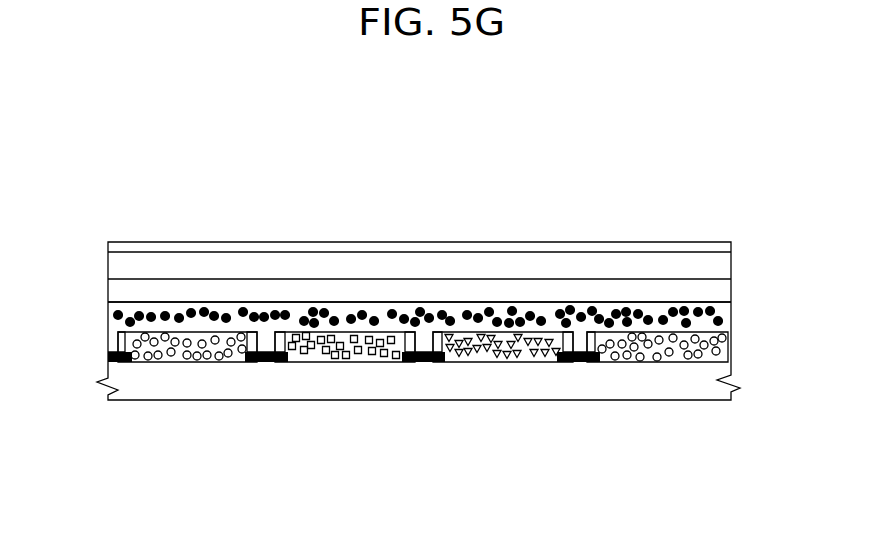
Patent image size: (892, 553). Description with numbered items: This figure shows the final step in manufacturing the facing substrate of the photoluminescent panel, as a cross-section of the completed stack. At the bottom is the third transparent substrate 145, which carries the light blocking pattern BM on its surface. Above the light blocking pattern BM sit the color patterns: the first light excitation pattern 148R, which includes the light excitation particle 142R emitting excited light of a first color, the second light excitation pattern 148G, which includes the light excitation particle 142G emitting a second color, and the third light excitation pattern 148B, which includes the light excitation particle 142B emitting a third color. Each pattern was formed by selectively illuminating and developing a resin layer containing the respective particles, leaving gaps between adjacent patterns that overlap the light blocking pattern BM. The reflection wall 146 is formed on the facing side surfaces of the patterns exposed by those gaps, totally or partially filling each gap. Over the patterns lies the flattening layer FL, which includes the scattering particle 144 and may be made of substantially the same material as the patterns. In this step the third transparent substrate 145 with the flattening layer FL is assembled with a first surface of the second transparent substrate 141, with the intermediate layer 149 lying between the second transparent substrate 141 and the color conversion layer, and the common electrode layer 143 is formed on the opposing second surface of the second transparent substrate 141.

The common electrode layer 143 is at (732, 244).
The second transparent substrate 141 is at (732, 266).
The intermediate layer 149 is at (732, 287).
The scattering particle 144 is at (732, 315).
The flattening layer FL is at (108, 311).
The reflection wall 146 is at (118, 336).
The light blocking pattern BM is at (108, 357).
The third transparent substrate 145 is at (160, 393).
The light excitation particle 142R is at (218, 362).
The light excitation particle 142G is at (328, 362).
The light excitation particle 142B is at (490, 362).
The first light excitation pattern 148R is at (198, 332).
The second light excitation pattern 148G is at (357, 332).
The third light excitation pattern 148B is at (510, 332).